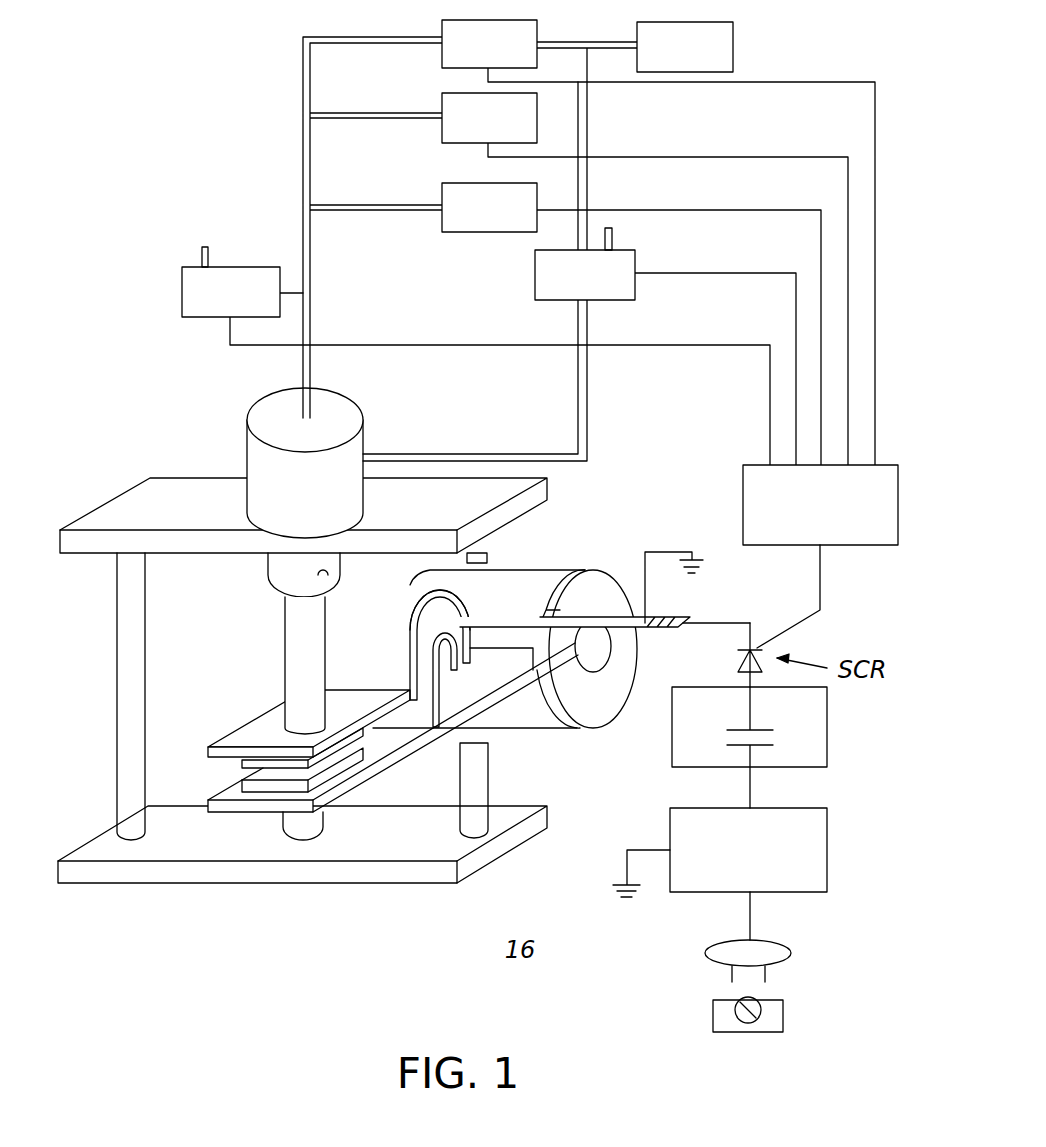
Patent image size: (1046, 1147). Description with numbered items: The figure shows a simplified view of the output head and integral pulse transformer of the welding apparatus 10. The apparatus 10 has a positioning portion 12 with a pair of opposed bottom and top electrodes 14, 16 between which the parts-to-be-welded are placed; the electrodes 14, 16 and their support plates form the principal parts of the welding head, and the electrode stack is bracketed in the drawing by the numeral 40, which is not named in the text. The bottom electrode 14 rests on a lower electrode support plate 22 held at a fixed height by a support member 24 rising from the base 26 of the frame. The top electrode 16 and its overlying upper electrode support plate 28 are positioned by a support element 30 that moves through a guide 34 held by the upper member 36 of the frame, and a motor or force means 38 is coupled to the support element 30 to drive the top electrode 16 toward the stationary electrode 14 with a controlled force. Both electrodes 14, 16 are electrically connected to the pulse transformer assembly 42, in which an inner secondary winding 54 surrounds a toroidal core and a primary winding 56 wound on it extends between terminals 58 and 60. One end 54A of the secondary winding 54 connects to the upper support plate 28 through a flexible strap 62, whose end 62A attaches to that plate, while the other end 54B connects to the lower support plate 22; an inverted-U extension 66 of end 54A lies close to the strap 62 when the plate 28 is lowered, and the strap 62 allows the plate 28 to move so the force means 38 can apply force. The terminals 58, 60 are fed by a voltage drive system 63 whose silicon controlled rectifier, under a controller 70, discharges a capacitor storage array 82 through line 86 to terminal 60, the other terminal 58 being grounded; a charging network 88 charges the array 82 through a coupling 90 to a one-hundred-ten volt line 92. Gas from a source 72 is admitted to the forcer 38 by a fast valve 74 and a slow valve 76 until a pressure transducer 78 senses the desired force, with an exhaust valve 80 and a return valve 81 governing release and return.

The welding apparatus 10 is at (404, 703).
The positioning portion 12 is at (120, 668).
The bottom electrode 14 is at (257, 787).
The top electrode 16 is at (273, 763).
The lower electrode support plate 22 is at (367, 773).
The support member 24 is at (303, 838).
The base 26 is at (103, 872).
The upper electrode support plate 28 is at (222, 753).
The support element 30 is at (293, 675).
The guide 34 is at (285, 580).
The upper member 36 is at (145, 500).
The motor (force means) 38 is at (280, 463).
The electrode and workpiece stack 40 is at (353, 793).
The pulse transformer assembly 42 is at (561, 665).
The inner secondary winding 54 is at (597, 700).
The end of inner secondary winding 54A is at (535, 660).
The other end of inner secondary winding 54B is at (500, 697).
The primary winding 56 is at (508, 603).
The terminal 58 is at (602, 620).
The terminal 60 is at (663, 627).
The flexible strap 62 is at (470, 632).
The end of flexible strap 62A is at (415, 673).
The voltage drive system 63 is at (751, 869).
The inverted-U extension 66 is at (423, 622).
The controller 70 is at (805, 518).
The gas source 72 is at (733, 57).
The valve 74 is at (442, 128).
The valve 76 is at (442, 52).
The pressure transducer 78 is at (482, 233).
The exhaust valve 80 is at (182, 294).
The return valve 81 is at (535, 278).
The capacitor storage array 82 is at (827, 733).
The line (discharge control line) 86 is at (725, 618).
The charging network 88 is at (827, 865).
The coupling 90 is at (703, 957).
The line 92 is at (712, 1017).